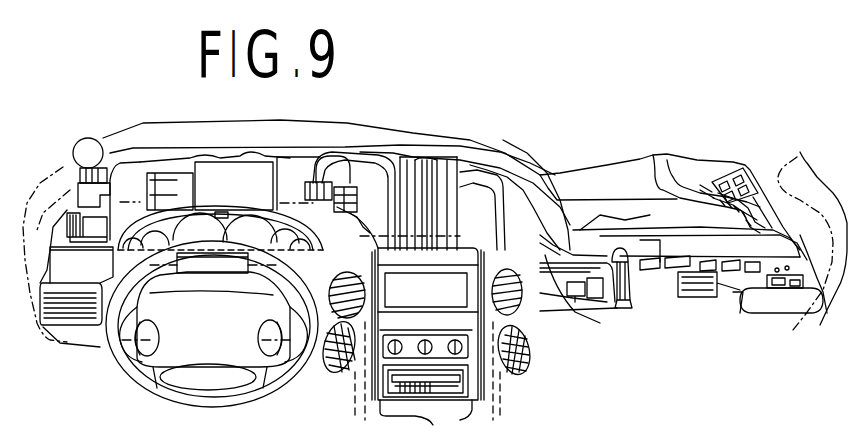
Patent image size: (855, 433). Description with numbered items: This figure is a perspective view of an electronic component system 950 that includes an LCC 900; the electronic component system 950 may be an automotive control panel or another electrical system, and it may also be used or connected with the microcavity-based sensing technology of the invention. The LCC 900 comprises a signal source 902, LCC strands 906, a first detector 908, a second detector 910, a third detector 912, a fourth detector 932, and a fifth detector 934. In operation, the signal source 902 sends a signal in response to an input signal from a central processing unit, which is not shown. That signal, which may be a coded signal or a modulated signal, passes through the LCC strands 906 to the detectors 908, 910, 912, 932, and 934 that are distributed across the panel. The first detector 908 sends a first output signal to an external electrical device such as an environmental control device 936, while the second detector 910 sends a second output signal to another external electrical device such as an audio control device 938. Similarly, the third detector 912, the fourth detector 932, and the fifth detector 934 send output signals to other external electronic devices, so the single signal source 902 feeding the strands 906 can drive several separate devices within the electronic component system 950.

The LCC 900 is at (505, 158).
The signal source 902 is at (90, 140).
The LCC strands 906 is at (357, 137).
The first detector 908 is at (413, 230).
The second detector 910 is at (457, 217).
The third detector 912 is at (633, 290).
The fourth detector 932 is at (707, 298).
The fifth detector 934 is at (770, 295).
The environmental control device 936 is at (380, 362).
The audio control device 938 is at (482, 317).
The electronic component system 950 is at (726, 93).